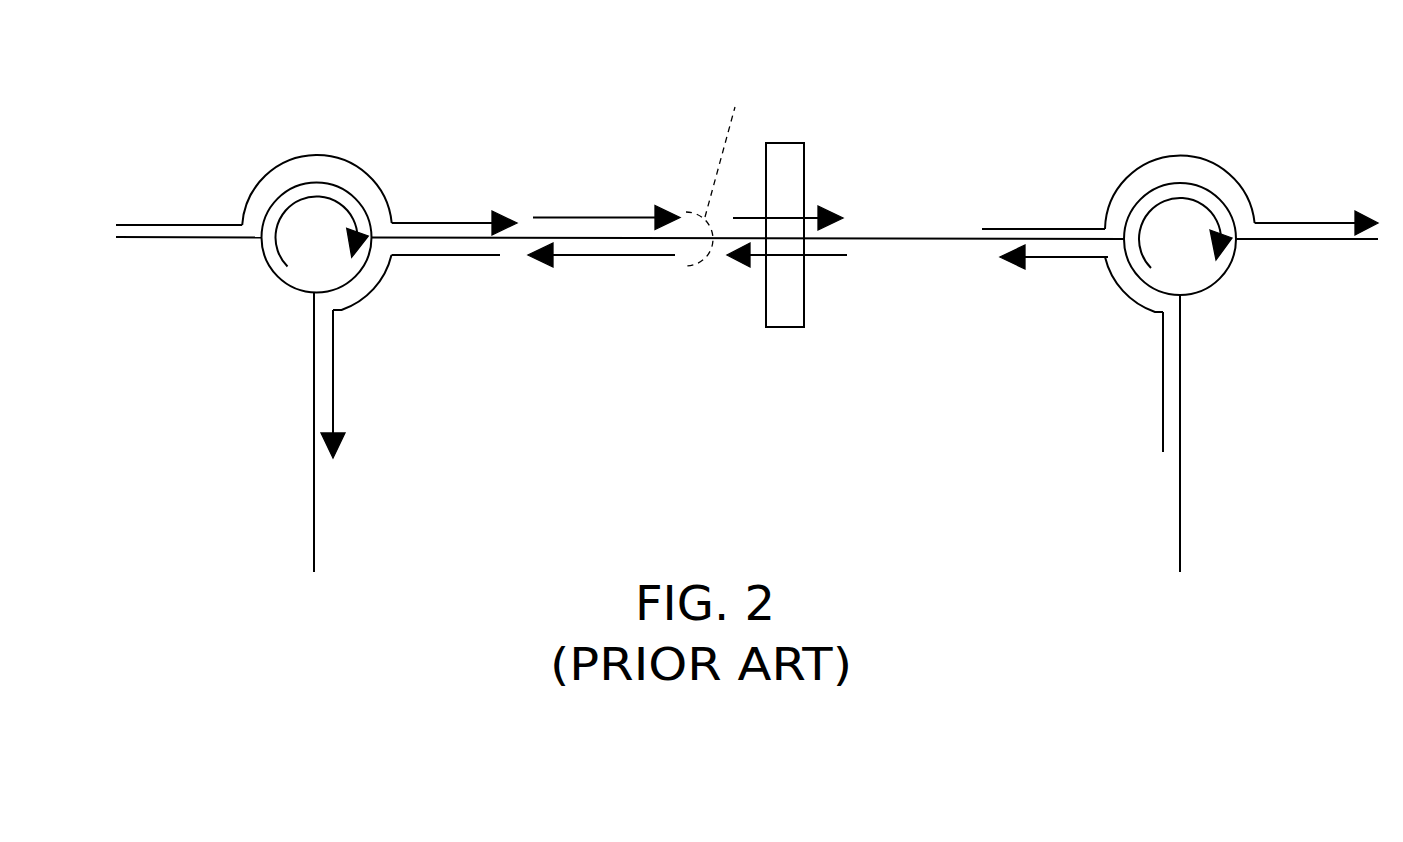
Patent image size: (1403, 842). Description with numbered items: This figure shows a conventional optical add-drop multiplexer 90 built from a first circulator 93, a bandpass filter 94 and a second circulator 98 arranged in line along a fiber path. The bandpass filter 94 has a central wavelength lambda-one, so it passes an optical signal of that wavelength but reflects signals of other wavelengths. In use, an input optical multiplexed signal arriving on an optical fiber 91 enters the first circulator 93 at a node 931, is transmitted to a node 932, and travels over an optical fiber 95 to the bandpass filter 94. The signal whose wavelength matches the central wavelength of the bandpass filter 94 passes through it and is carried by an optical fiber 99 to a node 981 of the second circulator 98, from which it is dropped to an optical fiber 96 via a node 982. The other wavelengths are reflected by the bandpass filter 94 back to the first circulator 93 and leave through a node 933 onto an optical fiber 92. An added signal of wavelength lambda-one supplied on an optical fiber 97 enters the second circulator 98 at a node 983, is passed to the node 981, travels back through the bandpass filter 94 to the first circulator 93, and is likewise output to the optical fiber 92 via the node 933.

The optical add-drop multiplexer 90 is at (935, 98).
The optical fiber 91 is at (190, 239).
The optical fiber 92 is at (313, 505).
The first circulator 93 is at (283, 287).
The node 931 is at (243, 222).
The node 932 is at (373, 235).
The node 933 is at (314, 291).
The bandpass filter 94 is at (787, 329).
The optical fiber 95 is at (514, 240).
The optical fiber 96 is at (1322, 242).
The optical fiber 97 is at (1180, 518).
The second circulator 98 is at (1220, 294).
The node 981 is at (1124, 238).
The node 982 is at (1237, 240).
The node 983 is at (1180, 297).
The optical fiber 99 is at (903, 242).